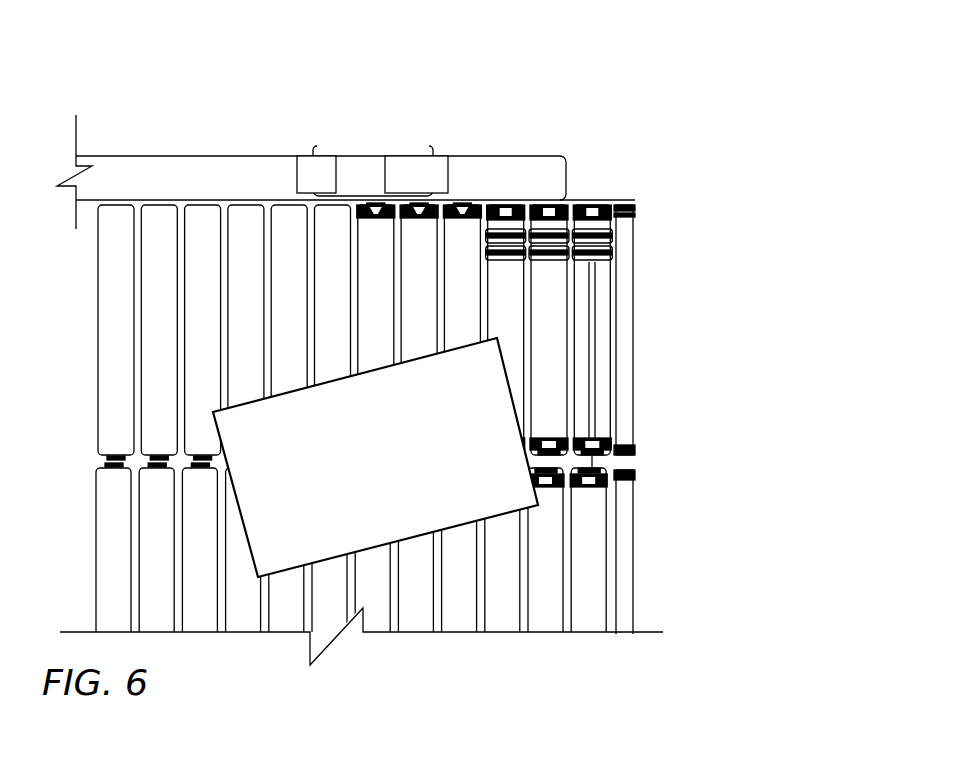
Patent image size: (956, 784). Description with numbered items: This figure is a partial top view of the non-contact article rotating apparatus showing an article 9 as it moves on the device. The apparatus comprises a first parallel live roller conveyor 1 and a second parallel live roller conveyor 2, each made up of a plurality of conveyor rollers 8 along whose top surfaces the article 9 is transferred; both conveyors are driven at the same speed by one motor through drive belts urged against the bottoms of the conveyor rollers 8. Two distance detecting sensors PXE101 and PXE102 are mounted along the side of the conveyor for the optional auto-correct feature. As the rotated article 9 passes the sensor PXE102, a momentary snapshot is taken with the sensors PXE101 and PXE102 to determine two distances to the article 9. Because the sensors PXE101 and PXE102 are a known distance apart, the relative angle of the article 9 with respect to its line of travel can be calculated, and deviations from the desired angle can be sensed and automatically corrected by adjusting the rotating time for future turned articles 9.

The first parallel live roller conveyor 1 is at (598, 198).
The second parallel live roller conveyor 2 is at (585, 634).
The conveyor roller 8 is at (597, 315).
The article 9 is at (503, 367).
The distance detecting sensor PXE101 is at (306, 157).
The distance detecting sensor PXE102 is at (443, 157).